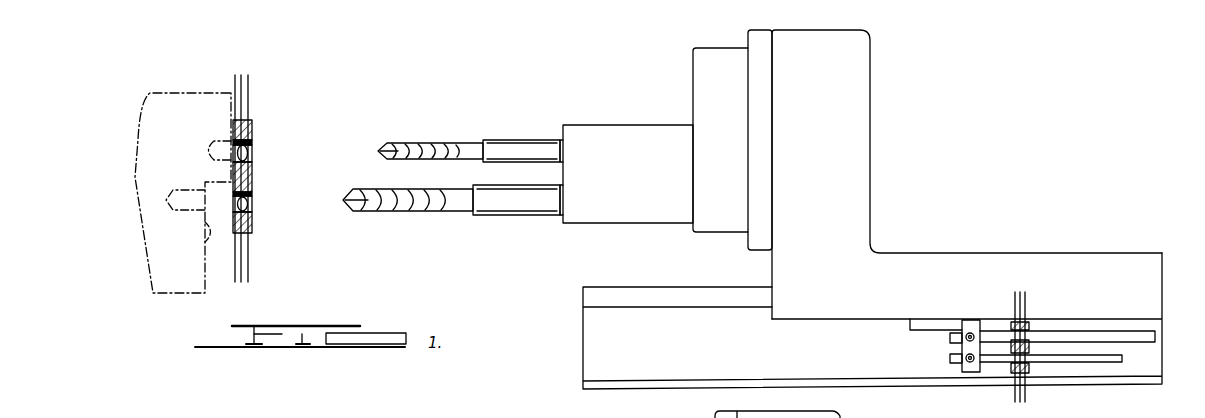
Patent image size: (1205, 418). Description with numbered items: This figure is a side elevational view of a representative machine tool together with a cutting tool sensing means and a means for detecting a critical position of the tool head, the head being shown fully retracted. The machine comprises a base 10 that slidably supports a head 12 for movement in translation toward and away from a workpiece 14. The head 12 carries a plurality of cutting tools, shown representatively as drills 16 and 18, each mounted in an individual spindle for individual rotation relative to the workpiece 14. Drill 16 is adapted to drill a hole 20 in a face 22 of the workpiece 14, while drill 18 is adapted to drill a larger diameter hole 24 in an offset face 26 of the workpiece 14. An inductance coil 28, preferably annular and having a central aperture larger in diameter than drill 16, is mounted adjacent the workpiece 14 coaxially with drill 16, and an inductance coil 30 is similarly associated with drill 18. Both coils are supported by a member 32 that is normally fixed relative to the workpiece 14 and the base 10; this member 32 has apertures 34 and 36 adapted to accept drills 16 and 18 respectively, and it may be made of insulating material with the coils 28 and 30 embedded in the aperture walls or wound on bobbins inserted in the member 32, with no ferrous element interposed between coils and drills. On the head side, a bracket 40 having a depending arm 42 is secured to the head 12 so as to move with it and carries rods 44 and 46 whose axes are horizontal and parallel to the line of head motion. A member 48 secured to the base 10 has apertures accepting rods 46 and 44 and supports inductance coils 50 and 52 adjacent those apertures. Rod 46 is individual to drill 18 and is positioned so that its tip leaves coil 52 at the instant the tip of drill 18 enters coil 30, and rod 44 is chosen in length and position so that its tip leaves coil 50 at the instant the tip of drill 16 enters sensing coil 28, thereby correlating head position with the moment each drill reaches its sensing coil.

The base 10 is at (852, 372).
The head 12 is at (860, 186).
The workpiece 14 is at (175, 293).
The drill 16 is at (468, 147).
The drill 18 is at (458, 207).
The hole 20 is at (213, 148).
The face 22 is at (232, 92).
The hole 24 is at (190, 192).
The offset face 26 is at (205, 236).
The inductance coil 28 is at (252, 132).
The inductance coil 30 is at (252, 208).
The member 32 is at (252, 178).
The aperture 34 is at (252, 150).
The aperture 36 is at (252, 198).
The bracket 40 is at (918, 333).
The depending arm 42 is at (986, 350).
The rod 44 is at (1127, 330).
The rod 46 is at (1110, 362).
The member 48 is at (1022, 350).
The inductance coil 50 is at (1012, 335).
The inductance coil 52 is at (1030, 360).